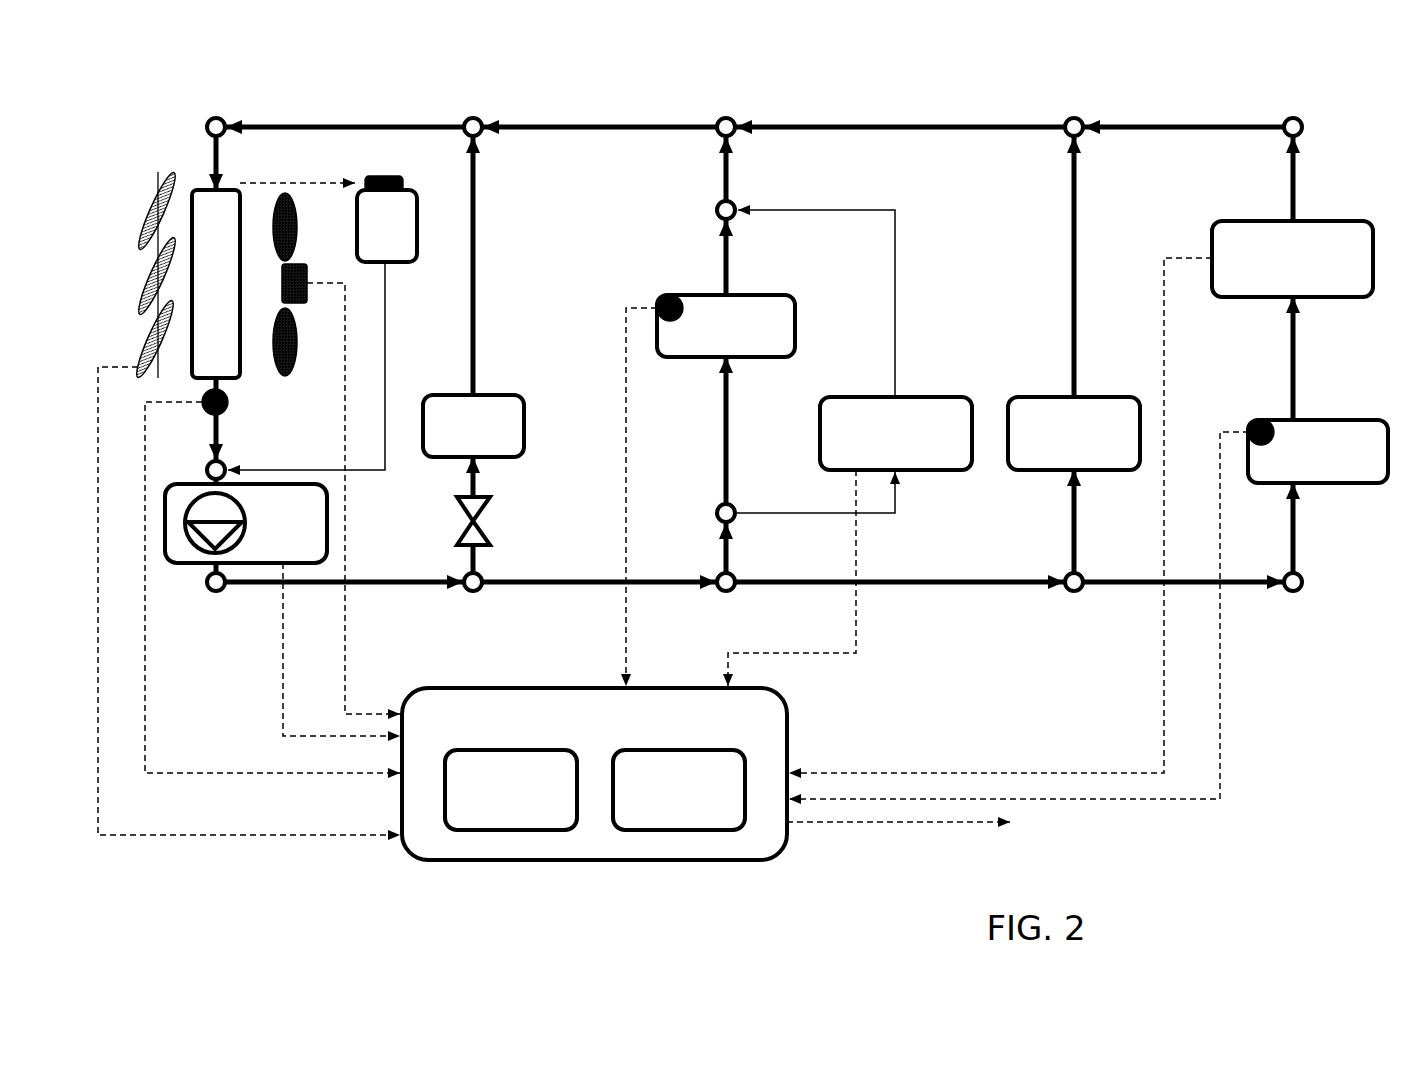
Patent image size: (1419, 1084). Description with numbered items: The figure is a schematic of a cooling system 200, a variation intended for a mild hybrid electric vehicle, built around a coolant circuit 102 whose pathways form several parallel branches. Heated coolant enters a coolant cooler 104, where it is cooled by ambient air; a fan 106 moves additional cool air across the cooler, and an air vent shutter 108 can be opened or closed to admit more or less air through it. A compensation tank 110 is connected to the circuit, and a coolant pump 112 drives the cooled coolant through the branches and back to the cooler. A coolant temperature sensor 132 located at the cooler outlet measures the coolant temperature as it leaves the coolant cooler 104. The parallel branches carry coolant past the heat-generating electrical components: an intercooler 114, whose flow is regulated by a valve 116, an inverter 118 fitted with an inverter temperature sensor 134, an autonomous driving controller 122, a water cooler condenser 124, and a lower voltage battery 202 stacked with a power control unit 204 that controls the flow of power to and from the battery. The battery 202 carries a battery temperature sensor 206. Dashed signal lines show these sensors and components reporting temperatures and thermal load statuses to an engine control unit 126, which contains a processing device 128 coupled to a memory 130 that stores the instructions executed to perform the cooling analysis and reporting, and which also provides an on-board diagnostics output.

The coolant circuit 102 is at (1153, 124).
The coolant cooler 104 is at (197, 187).
The fan 106 is at (313, 200).
The air vent shutter 108 is at (138, 195).
The compensation tank 110 is at (405, 185).
The coolant pump 112 is at (177, 567).
The intercooler 114 is at (495, 396).
The valve 116 is at (485, 527).
The inverter 118 is at (767, 295).
The autonomous driving controller 122 is at (925, 396).
The water cooler condenser 124 is at (1090, 396).
The engine control unit 126 is at (727, 790).
The processing device 128 is at (518, 831).
The memory 130 is at (678, 831).
The coolant temperature sensor 132 is at (206, 410).
The inverter temperature sensor 134 is at (673, 322).
The cooling system 200 is at (1270, 705).
The battery 202 is at (1365, 420).
The power control unit 204 is at (1330, 221).
The battery temperature sensor 206 is at (1260, 446).